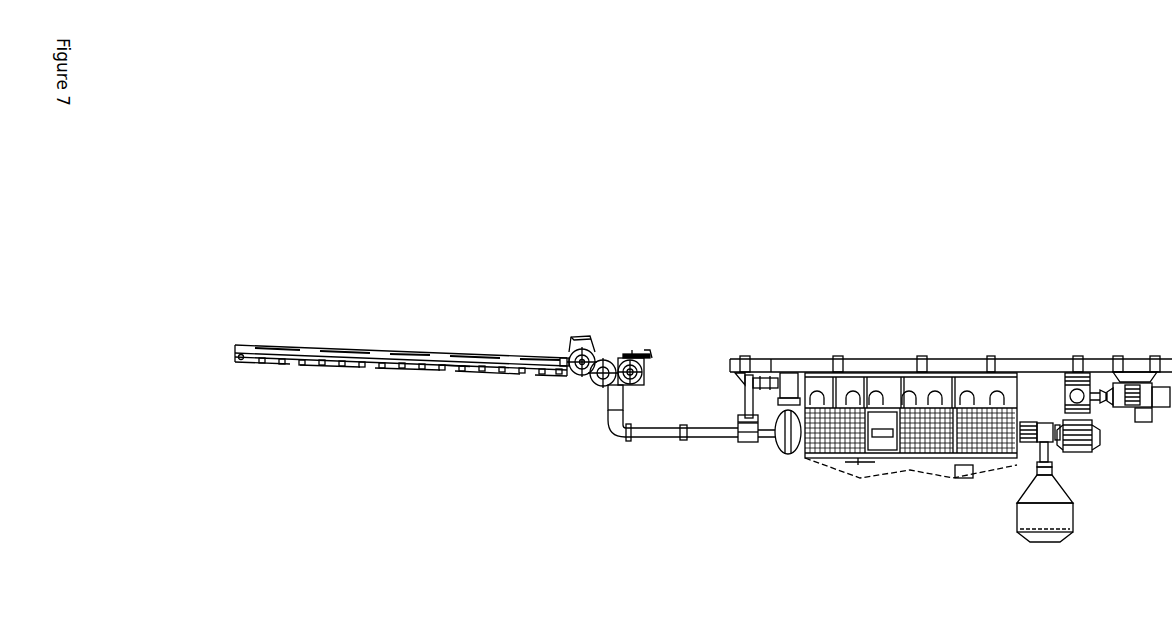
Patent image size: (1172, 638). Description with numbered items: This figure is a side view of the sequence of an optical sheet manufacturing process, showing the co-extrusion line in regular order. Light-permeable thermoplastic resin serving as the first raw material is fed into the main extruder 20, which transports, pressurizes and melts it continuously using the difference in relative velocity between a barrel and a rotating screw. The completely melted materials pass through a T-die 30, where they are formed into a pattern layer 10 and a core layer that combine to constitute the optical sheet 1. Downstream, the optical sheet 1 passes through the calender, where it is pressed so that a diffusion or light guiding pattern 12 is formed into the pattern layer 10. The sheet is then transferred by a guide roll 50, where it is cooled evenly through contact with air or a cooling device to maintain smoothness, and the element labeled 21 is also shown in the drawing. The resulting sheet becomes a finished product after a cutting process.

The optical sheet 1 is at (456, 373).
The pattern layer 10 is at (600, 386).
The diffusion or light guiding pattern 12 is at (646, 370).
The main extruder 20 is at (294, 365).
The collection tank 21 is at (1044, 545).
The T-die 30 is at (627, 397).
The guide roll 50 is at (909, 477).